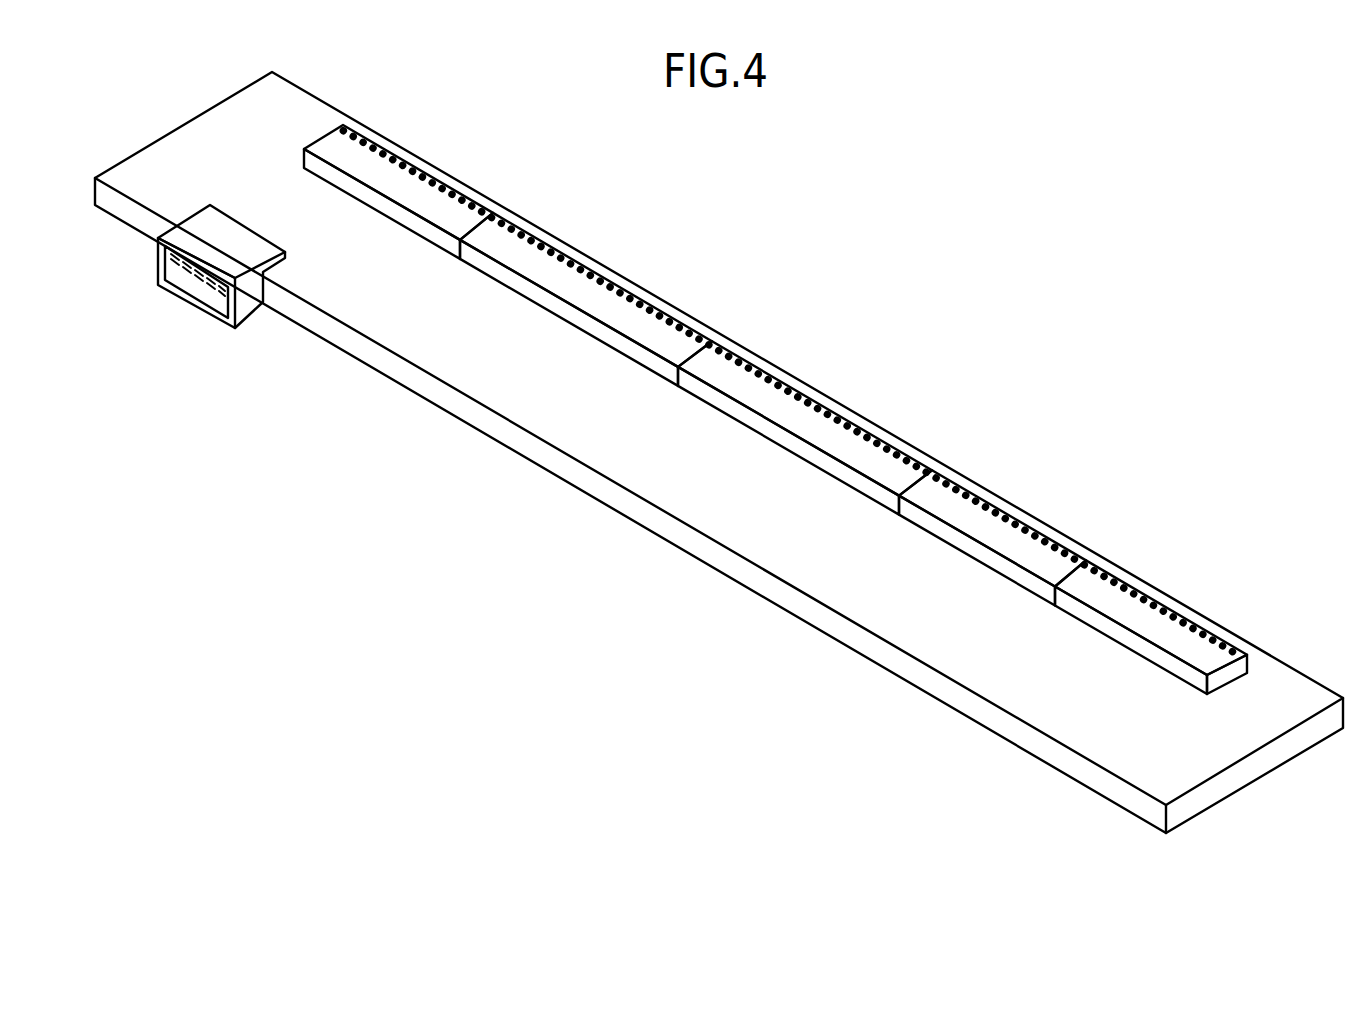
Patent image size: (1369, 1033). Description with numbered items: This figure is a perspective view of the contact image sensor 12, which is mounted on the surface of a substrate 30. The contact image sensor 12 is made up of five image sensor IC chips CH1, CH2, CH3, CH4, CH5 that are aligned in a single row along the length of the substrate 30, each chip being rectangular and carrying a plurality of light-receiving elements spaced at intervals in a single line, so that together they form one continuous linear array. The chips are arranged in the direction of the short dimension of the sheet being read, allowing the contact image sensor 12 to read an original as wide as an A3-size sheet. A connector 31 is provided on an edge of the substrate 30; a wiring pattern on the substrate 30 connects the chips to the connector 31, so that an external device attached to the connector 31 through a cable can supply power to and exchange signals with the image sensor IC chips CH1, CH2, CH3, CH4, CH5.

The contact image sensor 12 is at (1258, 700).
The substrate 30 is at (1176, 753).
The connector 31 is at (187, 233).
The image sensor IC chip CH1 is at (402, 190).
The image sensor IC chip CH2 is at (587, 297).
The image sensor IC chip CH3 is at (808, 423).
The image sensor IC chip CH4 is at (1005, 538).
The image sensor IC chip CH5 is at (1150, 625).